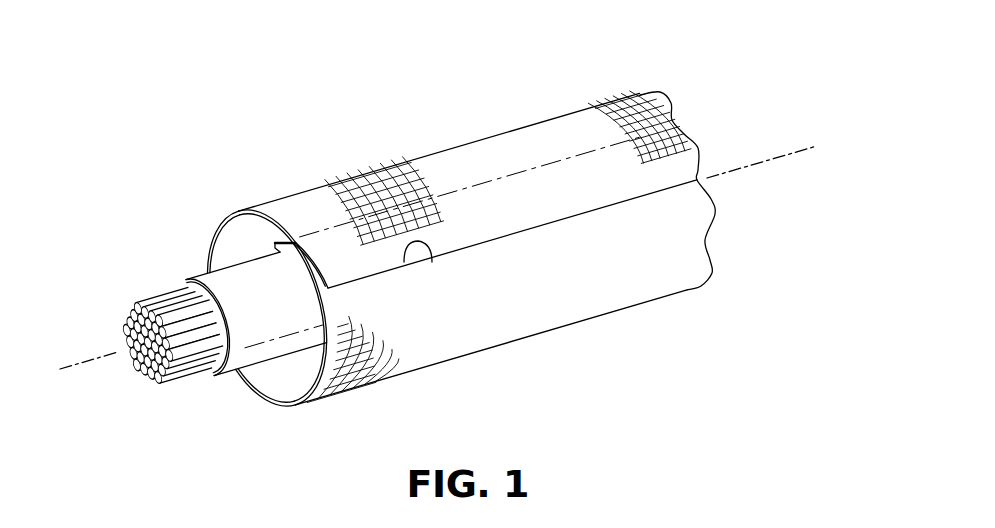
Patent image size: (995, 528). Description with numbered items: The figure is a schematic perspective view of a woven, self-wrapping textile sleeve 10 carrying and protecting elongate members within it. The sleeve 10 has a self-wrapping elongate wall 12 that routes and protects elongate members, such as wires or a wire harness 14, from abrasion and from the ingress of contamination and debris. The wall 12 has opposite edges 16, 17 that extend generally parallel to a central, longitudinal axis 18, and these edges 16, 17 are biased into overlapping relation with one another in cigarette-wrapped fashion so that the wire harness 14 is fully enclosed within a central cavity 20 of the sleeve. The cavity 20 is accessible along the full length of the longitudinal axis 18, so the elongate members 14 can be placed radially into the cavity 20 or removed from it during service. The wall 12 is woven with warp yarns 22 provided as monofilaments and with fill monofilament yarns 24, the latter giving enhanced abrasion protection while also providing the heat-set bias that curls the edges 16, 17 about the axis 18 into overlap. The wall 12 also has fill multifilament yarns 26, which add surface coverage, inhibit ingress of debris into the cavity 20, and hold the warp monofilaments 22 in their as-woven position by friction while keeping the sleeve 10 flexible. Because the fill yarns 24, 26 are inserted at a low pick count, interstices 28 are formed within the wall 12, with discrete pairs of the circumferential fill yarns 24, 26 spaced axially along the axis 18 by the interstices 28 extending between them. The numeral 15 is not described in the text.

The sleeve 10 is at (441, 249).
The elongate wall 12 is at (581, 108).
The wire harness 14 is at (202, 272).
The upper flap end edge 15 is at (324, 193).
The edge 16 is at (404, 262).
The edge 17 is at (275, 243).
The central longitudinal axis 18 is at (784, 151).
The central cavity 20 is at (278, 381).
The warp yarns 22 is at (421, 211).
The fill monofilament yarns 24 is at (447, 256).
The fill multifilament yarns 26 is at (432, 262).
The interstices 28 is at (372, 193).